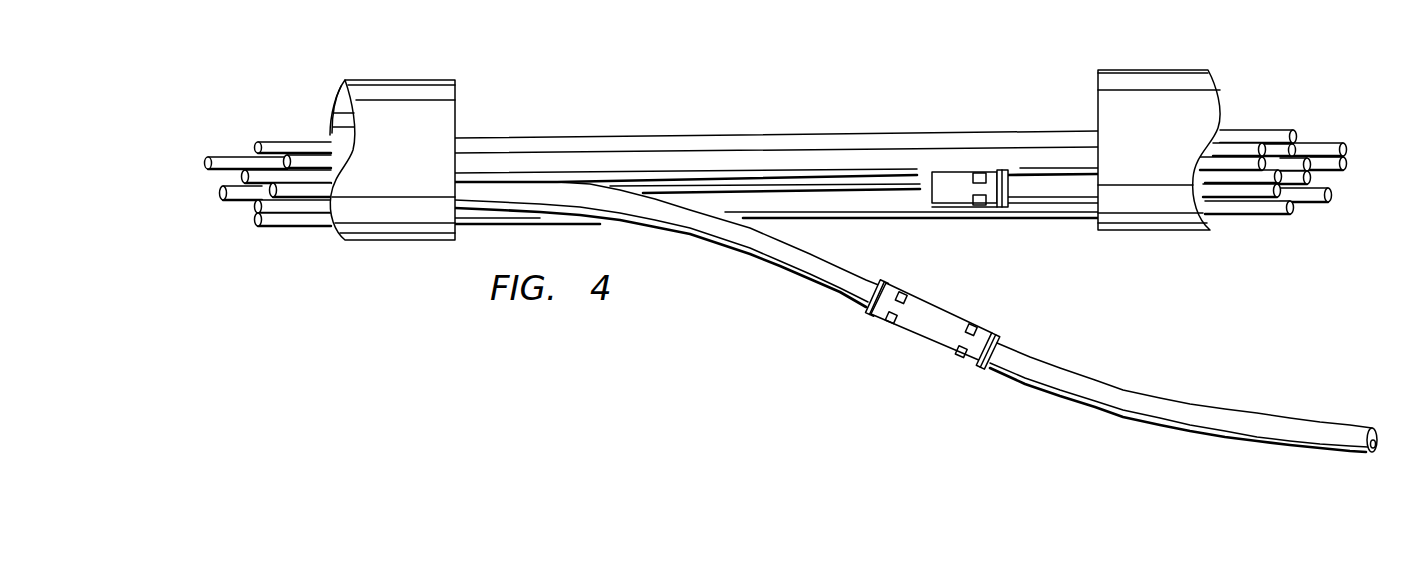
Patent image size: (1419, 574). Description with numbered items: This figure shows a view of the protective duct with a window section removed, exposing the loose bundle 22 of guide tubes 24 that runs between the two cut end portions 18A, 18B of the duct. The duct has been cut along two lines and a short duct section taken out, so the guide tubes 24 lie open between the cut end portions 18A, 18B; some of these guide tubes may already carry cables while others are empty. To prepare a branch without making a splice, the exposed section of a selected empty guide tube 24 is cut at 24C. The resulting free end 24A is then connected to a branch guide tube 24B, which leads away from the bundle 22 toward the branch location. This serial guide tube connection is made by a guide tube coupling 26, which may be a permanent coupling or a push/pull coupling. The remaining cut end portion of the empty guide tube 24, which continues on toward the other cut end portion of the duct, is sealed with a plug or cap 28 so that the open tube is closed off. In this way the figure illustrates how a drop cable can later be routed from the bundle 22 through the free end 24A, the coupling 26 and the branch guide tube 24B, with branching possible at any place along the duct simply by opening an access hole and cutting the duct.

The cut end portion 18A is at (393, 79).
The cut end portion 18B is at (1157, 70).
The bundle 22 is at (271, 118).
The guide tubes 24 is at (300, 197).
The free end 24A is at (743, 255).
The branch guide tube 24B is at (1243, 408).
The cut 24C is at (860, 293).
The guide tube coupling 26 is at (920, 343).
The plug or cap 28 is at (953, 190).